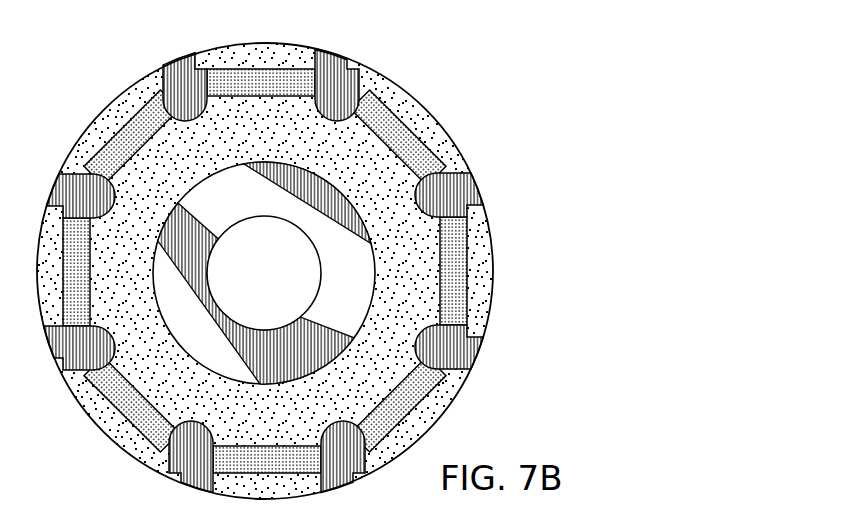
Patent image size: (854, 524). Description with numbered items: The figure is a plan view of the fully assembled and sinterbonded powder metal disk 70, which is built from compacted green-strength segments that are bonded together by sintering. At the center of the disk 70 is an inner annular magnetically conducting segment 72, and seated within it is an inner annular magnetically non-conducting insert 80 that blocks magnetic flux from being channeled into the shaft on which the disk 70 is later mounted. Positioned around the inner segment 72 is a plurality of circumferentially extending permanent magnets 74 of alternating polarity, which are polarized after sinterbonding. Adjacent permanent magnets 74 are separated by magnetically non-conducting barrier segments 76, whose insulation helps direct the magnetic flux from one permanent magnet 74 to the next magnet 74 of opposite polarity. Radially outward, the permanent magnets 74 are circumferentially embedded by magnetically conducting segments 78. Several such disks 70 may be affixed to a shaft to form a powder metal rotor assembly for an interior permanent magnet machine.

The disk 70 is at (82, 64).
The inner annular magnetically conducting segment 72 is at (131, 252).
The permanent magnet 74 is at (62, 289).
The magnetically non-conducting barrier segment 76 is at (63, 361).
The radially outer magnetically conducting segment 78 is at (106, 118).
The inner annular magnetically non-conducting insert 80 is at (203, 297).